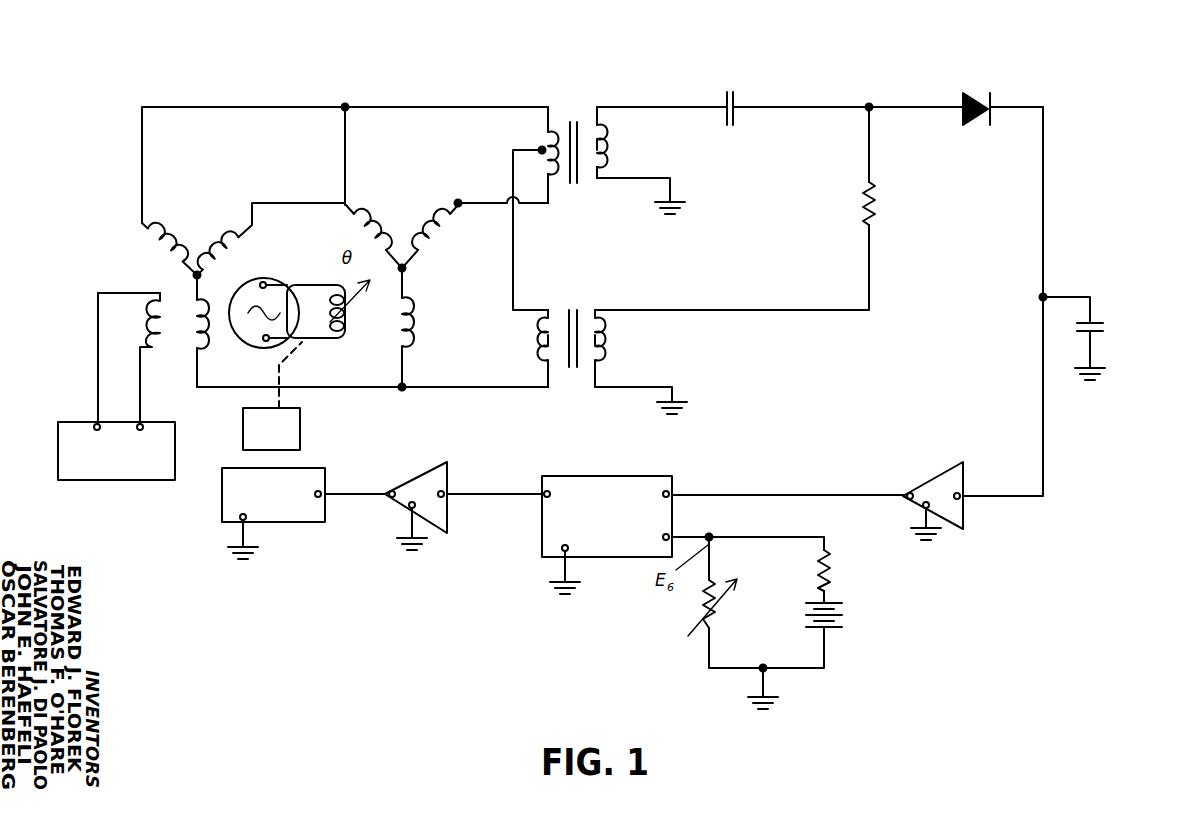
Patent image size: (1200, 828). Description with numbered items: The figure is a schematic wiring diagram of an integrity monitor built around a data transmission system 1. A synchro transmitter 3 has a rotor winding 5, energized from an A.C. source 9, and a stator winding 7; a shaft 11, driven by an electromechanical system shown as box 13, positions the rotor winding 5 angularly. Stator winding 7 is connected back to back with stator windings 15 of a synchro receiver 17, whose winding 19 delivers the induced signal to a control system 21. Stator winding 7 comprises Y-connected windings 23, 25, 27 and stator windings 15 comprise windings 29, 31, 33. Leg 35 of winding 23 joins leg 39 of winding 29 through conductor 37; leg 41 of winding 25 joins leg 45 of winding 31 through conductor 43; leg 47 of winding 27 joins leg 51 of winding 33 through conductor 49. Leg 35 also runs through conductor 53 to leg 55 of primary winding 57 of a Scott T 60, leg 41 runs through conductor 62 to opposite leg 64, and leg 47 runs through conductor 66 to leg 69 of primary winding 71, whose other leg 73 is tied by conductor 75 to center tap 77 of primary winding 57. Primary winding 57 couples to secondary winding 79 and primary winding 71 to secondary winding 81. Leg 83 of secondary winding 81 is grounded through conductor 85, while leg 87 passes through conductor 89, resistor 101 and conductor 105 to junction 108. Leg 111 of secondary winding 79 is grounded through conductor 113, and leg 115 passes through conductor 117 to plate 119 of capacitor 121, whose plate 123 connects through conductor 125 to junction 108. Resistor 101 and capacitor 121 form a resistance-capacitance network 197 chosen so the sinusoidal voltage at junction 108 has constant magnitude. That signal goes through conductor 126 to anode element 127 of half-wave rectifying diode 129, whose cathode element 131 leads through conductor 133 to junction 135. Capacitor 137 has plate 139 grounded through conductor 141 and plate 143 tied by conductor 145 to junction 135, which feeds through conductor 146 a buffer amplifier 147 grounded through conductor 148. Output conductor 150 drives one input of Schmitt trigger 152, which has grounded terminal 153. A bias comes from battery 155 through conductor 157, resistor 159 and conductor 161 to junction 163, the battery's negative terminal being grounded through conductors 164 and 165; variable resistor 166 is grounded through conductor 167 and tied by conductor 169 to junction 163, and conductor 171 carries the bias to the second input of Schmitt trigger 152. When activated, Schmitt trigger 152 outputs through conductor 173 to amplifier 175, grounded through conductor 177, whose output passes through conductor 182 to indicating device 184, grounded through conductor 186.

The data transmission system 1 is at (333, 60).
The synchro transmitter 3 is at (375, 353).
The rotor winding 5 is at (330, 300).
The stator winding 7 is at (432, 292).
The A.C. source 9 is at (263, 282).
The shaft 11 is at (286, 368).
The box 13 is at (262, 437).
The stator windings 15 is at (200, 221).
The synchro receiver 17 is at (167, 288).
The winding 19 is at (147, 356).
The control system 21 is at (104, 466).
The winding 23 is at (379, 236).
The winding 25 is at (442, 245).
The winding 27 is at (412, 325).
The stator winding 29 is at (165, 246).
The stator winding 31 is at (220, 250).
The stator winding 33 is at (204, 325).
The leg 35 is at (343, 218).
The conductor 37 is at (223, 106).
The leg 39 is at (141, 228).
The leg 41 is at (456, 218).
The conductor 43 is at (370, 203).
The leg 45 is at (256, 226).
The leg 47 is at (404, 350).
The conductor 49 is at (353, 388).
The leg 51 is at (197, 356).
The conductor 53 is at (431, 107).
The leg 55 is at (540, 118).
The primary winding 57 is at (548, 166).
The Scott T 60 is at (586, 80).
The conductor 62 is at (497, 203).
The leg 64 is at (556, 198).
The conductor 66 is at (467, 388).
The leg 69 is at (543, 370).
The primary winding 71 is at (536, 342).
The leg 73 is at (538, 318).
The conductor 75 is at (516, 281).
The center tap 77 is at (538, 150).
The secondary winding 79 is at (608, 150).
The secondary winding 81 is at (610, 345).
The leg 83 is at (608, 375).
The conductor 85 is at (636, 389).
The leg 87 is at (609, 318).
The conductor 89 is at (762, 312).
The resistor 101 is at (876, 205).
The conductor 105 is at (872, 158).
The junction 108 is at (873, 105).
The leg 111 is at (608, 173).
The conductor 113 is at (675, 190).
The leg 115 is at (606, 120).
The conductor 117 is at (632, 107).
The plate 119 is at (726, 107).
The capacitor 121 is at (736, 90).
The plate 123 is at (745, 107).
The conductor 125 is at (816, 107).
The conductor 126 is at (919, 107).
The anode element 127 is at (961, 115).
The diode 129 is at (986, 86).
The cathode element 131 is at (1000, 104).
The conductor 133 is at (1046, 203).
The junction 135 is at (1043, 297).
The capacitor 137 is at (1110, 327).
The plate 139 is at (1105, 338).
The conductor 141 is at (1095, 362).
The plate 143 is at (1097, 322).
The conductor 145 is at (1074, 297).
The conductor 146 is at (1046, 428).
The buffer amplifier 147 is at (940, 474).
The conductor 148 is at (922, 518).
The output conductor 150 is at (818, 494).
The Schmitt trigger 152 is at (616, 559).
The input-output terminal 153 is at (556, 562).
The battery 155 is at (856, 617).
The conductor 157 is at (831, 599).
The resistor 159 is at (836, 566).
The conductor 161 is at (753, 537).
The junction 163 is at (708, 537).
The conductor 164 is at (831, 656).
The conductor 165 is at (771, 681).
The variable resistor 166 is at (721, 621).
The conductor 167 is at (716, 656).
The conductor 169 is at (716, 566).
The conductor 171 is at (685, 537).
The output conductor 173 is at (495, 493).
The amplifier 175 is at (437, 473).
The conductor 177 is at (406, 530).
The conductor 182 is at (356, 493).
The indicating device 184 is at (257, 520).
The conductor 186 is at (240, 533).
The resistance-capacitance network 197 is at (799, 178).